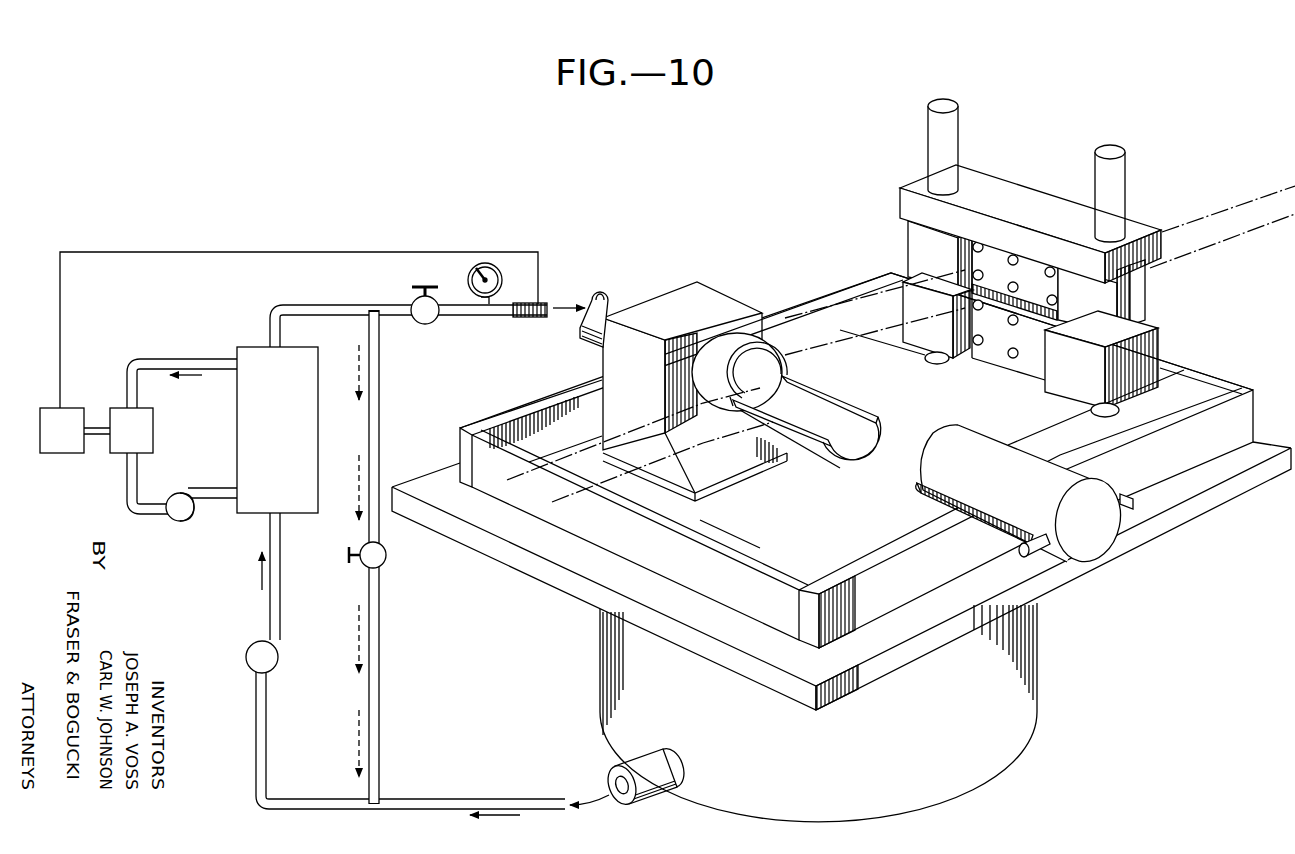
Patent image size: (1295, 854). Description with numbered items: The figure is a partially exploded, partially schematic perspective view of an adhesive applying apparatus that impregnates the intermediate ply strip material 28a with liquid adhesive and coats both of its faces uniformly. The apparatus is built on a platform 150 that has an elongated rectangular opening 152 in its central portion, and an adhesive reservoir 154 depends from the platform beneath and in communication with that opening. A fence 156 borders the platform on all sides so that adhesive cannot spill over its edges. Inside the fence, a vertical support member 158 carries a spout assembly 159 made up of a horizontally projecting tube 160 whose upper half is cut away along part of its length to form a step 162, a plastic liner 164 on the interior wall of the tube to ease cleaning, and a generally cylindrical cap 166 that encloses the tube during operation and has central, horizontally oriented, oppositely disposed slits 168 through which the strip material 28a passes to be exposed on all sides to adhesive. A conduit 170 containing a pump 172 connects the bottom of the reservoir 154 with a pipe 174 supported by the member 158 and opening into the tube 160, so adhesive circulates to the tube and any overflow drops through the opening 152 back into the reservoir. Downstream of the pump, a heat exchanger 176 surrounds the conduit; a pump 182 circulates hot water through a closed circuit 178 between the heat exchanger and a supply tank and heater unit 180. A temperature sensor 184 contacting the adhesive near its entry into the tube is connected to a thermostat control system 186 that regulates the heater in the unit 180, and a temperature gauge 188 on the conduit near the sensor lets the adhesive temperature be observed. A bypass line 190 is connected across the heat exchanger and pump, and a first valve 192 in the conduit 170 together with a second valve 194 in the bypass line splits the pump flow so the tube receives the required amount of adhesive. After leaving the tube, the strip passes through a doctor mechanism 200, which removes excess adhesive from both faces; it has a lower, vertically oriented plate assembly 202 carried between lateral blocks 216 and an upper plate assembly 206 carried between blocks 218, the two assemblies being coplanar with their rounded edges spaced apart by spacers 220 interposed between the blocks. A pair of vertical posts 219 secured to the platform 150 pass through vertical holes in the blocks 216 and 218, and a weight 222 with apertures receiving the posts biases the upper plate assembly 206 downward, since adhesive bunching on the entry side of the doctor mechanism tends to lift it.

The intermediate ply strip material 28a is at (1242, 203).
The platform 150 is at (1185, 513).
The elongated rectangular opening 152 is at (820, 527).
The adhesive reservoir 154 is at (1040, 648).
The fence 156 is at (848, 301).
The vertical support member 158 is at (617, 372).
The spout assembly 159 is at (872, 486).
The horizontally projecting tube 160 is at (736, 345).
The step 162 is at (843, 406).
The plastic liner 164 is at (886, 420).
The cap 166 is at (1036, 452).
The slits 168 is at (967, 497).
The conduit 170 is at (332, 290).
The pump 172 is at (280, 662).
The pipe 174 is at (598, 338).
The heat exchanger 176 is at (291, 439).
The closed circuit 178 is at (178, 362).
The supply tank and heater unit 180 is at (148, 442).
The pump 182 is at (183, 523).
The temperature sensor 184 is at (540, 302).
The thermostat control system 186 is at (80, 442).
The temperature gauge 188 is at (470, 268).
The bypass line 190 is at (380, 422).
The first valve 192 is at (424, 324).
The second valve 194 is at (386, 560).
The doctor mechanism 200 is at (1019, 258).
The lower plate assembly 202 is at (1038, 364).
The upper plate assembly 206 is at (997, 255).
The lateral blocks 216 is at (898, 298).
The blocks 218 is at (908, 226).
The vertical posts 219 is at (960, 133).
The spacers 220 is at (935, 278).
The weight 222 is at (1012, 187).